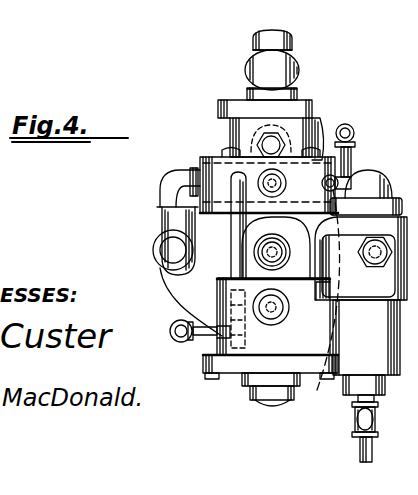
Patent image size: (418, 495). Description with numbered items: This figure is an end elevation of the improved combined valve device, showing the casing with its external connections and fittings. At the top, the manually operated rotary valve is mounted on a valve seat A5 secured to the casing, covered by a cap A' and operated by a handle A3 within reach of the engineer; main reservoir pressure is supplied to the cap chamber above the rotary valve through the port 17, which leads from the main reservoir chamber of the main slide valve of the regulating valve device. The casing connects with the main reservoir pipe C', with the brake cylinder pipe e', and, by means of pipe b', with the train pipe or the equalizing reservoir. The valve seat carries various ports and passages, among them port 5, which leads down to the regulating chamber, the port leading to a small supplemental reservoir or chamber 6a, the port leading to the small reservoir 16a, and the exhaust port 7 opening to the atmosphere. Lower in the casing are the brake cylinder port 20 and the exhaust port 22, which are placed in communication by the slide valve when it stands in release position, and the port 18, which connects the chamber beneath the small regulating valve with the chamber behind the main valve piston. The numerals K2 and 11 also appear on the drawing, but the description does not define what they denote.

The handle A3 is at (279, 73).
The cap A' is at (250, 128).
The valve seat A5 is at (222, 183).
The port 17 is at (319, 130).
The port 18 is at (328, 240).
The main reservoir pipe C' is at (345, 432).
The pipe b' is at (351, 157).
The port 5 is at (237, 192).
The supplemental reservoir 6a is at (283, 179).
The chamber boss K2 is at (263, 252).
The lower casing block 11 is at (320, 284).
The exhaust port 22 is at (230, 302).
The brake cylinder port 20 is at (228, 332).
The small reservoir 16a is at (180, 245).
The exhaust port 7 is at (197, 177).
The brake cylinder pipe e' is at (193, 341).